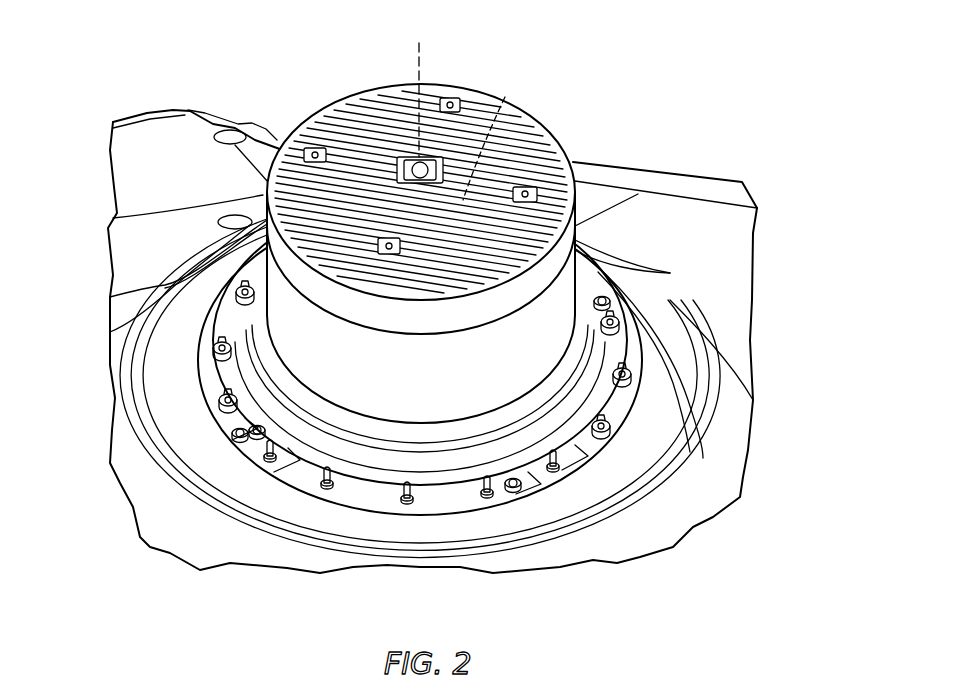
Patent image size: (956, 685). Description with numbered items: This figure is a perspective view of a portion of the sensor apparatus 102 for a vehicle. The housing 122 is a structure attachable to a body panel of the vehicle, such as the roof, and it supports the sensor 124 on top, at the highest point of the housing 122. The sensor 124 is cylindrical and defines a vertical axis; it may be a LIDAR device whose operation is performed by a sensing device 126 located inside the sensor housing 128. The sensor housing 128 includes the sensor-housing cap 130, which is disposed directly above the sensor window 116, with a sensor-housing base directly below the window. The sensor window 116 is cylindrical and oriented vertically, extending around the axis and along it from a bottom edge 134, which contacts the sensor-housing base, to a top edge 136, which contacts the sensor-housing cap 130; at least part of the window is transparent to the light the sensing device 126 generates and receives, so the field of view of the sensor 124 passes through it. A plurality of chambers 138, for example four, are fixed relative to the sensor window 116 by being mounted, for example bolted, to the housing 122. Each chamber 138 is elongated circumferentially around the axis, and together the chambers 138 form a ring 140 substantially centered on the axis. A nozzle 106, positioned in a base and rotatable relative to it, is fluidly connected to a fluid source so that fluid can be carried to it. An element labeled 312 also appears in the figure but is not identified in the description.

The sensor apparatus 102 is at (573, 40).
The nozzle 106 is at (560, 458).
The sensor window 116 is at (577, 228).
The housing 122 is at (143, 163).
The sensor 124 is at (545, 115).
The sensing device 126 is at (505, 97).
The sensor housing 128 is at (355, 122).
The sensor-housing cap 130 is at (552, 140).
The bottom edge 134 is at (378, 418).
The top edge 136 is at (394, 342).
The chambers 138 is at (220, 324).
The ring 140 is at (600, 272).
The outer ring 312 is at (300, 488).